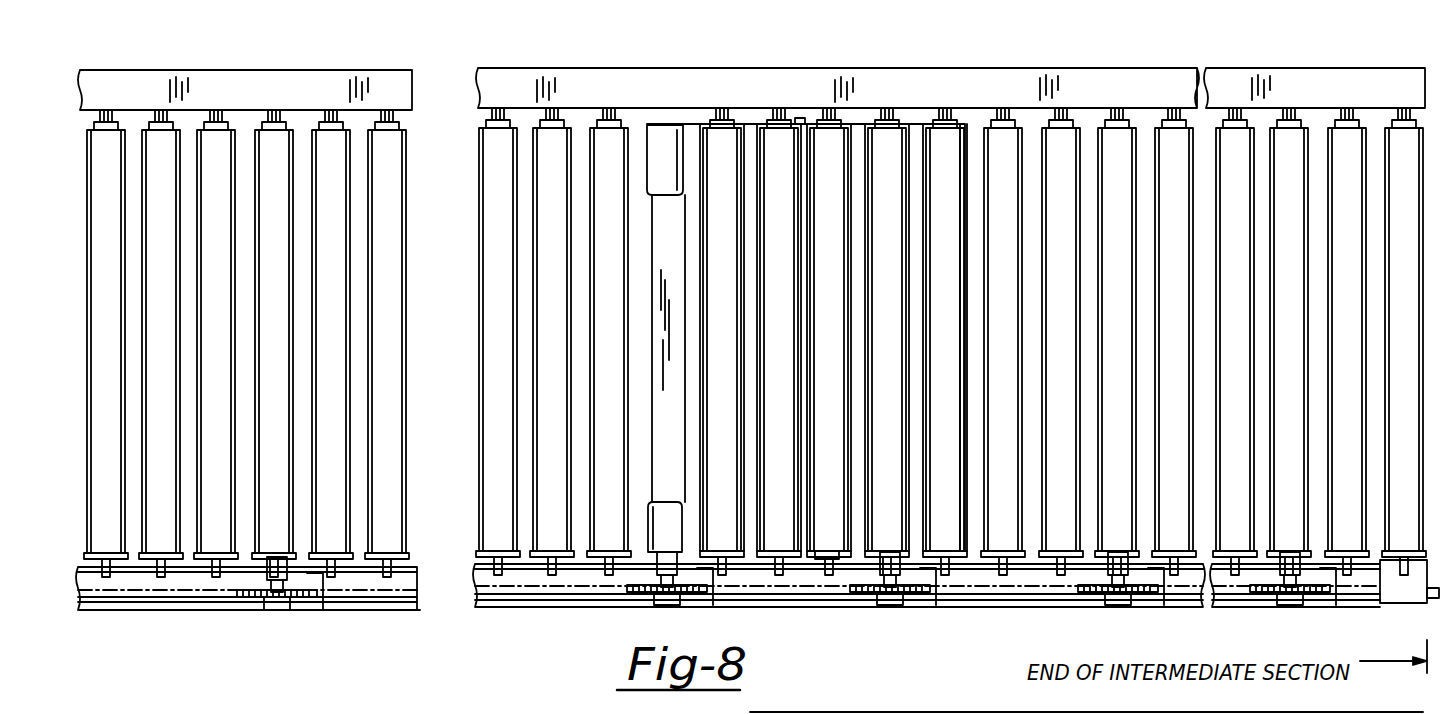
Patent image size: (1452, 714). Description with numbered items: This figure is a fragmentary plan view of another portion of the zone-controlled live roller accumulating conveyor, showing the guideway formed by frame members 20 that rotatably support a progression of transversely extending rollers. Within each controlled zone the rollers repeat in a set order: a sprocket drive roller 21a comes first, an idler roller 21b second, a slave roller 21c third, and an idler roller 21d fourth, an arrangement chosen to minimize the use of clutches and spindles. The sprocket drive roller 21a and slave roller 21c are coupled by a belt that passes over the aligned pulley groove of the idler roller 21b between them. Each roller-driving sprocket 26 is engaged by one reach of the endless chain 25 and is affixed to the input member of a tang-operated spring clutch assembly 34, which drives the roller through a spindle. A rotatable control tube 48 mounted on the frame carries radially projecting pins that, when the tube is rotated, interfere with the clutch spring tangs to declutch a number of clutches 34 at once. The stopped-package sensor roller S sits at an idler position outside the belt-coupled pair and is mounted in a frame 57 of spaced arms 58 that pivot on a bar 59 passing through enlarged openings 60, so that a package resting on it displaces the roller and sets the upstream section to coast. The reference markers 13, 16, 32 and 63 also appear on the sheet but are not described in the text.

The sprocket drive roller 21a is at (277, 140).
The idler roller 21b is at (218, 143).
The slave roller 21c is at (160, 143).
The idler roller 21d is at (105, 143).
The sensor roller S is at (330, 153).
The section line 13 is at (637, 565).
The section line 16 is at (120, 683).
The frame member 20 is at (1413, 596).
The endless chain 25 is at (1003, 587).
The sprocket 26 is at (245, 600).
The rail member 32 is at (870, 705).
The spring clutch assembly 34 is at (300, 603).
The control tube 48 is at (503, 603).
The frame 57 is at (650, 344).
The arm 58 is at (755, 128).
The bar 59 is at (807, 367).
The enlarged opening 60 is at (817, 550).
The bracket 63 is at (590, 553).